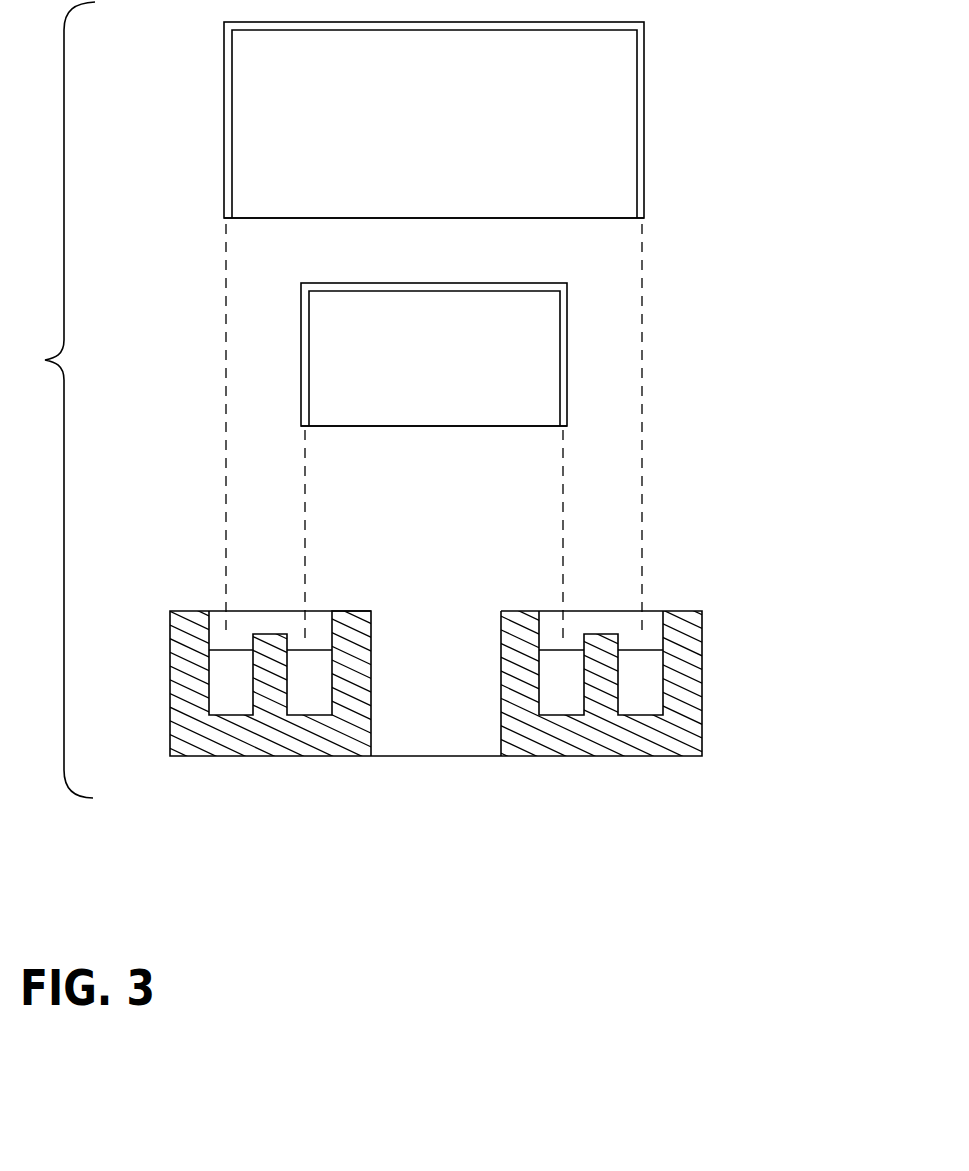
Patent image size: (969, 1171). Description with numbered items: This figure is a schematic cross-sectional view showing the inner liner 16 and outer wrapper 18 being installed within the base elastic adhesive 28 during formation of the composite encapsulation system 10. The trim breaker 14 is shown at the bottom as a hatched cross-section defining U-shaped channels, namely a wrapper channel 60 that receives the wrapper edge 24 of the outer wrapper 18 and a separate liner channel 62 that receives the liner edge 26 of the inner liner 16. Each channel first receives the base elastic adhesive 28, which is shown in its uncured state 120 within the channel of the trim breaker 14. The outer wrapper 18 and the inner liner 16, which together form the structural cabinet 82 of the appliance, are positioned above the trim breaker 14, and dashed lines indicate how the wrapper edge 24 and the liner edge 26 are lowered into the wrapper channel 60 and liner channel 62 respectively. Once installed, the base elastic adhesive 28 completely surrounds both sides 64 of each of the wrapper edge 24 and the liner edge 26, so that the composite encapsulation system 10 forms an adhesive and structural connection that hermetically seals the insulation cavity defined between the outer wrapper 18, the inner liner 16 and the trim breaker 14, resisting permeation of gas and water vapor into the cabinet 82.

The composite encapsulation system 10 is at (507, 674).
The trim breaker 14 is at (546, 763).
The inner liner 16 is at (512, 393).
The outer wrapper 18 is at (484, 256).
The wrapper edge 24 is at (644, 218).
The liner edge 26 is at (303, 426).
The base elastic adhesive 28 is at (237, 696).
The wrapper channel 60 is at (655, 612).
The liner channel 62 is at (550, 614).
The sides 64 is at (641, 190).
The structural cabinet 82 is at (51, 400).
The uncured state 120 is at (646, 679).